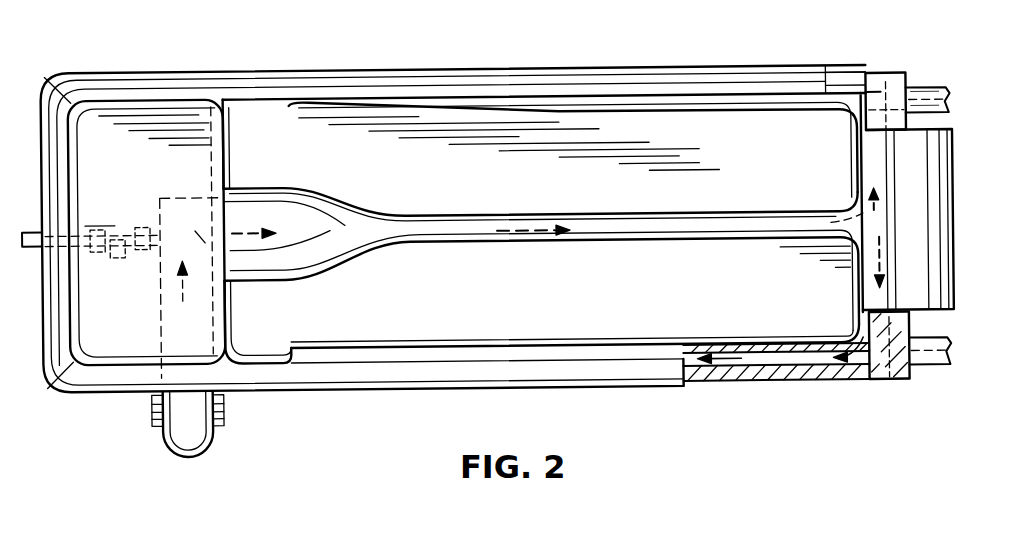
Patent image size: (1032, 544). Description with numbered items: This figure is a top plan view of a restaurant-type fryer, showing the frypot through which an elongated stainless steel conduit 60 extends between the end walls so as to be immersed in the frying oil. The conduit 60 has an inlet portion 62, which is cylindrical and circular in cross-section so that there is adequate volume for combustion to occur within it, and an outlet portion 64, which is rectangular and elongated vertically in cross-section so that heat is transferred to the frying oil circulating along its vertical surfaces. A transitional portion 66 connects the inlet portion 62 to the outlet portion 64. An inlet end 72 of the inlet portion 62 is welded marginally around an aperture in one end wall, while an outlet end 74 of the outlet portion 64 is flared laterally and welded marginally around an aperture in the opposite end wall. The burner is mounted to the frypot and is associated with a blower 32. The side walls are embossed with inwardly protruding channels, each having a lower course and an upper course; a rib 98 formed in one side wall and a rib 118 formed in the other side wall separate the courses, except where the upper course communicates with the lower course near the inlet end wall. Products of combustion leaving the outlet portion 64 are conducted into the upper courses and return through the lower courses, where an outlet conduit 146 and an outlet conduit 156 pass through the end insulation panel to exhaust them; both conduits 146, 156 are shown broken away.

The conduit 156 is at (925, 97).
The rib 118 is at (441, 104).
The inlet end 72 is at (239, 186).
The inlet portion 62 is at (266, 200).
The transitional portion 66 is at (322, 200).
The conduit 60 is at (503, 216).
The outlet portion 64 is at (650, 218).
The outlet end 74 is at (850, 213).
The rib 98 is at (419, 348).
The conduit 146 is at (927, 375).
The blower 32 is at (158, 441).